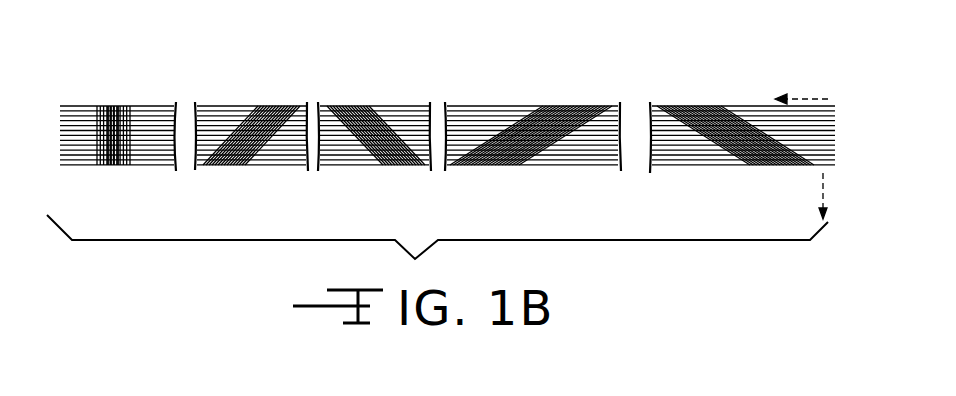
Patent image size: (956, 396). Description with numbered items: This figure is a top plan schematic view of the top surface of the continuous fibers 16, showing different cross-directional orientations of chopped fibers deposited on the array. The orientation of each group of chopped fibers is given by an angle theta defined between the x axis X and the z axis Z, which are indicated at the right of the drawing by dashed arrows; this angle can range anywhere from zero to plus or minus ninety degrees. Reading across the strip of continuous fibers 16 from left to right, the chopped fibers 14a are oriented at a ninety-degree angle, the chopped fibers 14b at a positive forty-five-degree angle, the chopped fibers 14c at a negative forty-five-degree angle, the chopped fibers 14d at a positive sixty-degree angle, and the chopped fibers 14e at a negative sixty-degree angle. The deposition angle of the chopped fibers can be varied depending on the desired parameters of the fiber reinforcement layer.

The continuous fibers 16 is at (86, 105).
The chopped fibers 14a is at (130, 110).
The chopped fibers 14b is at (243, 120).
The chopped fibers 14c is at (380, 112).
The chopped fibers 14d is at (510, 130).
The chopped fibers 14e is at (737, 118).
The x axis X is at (812, 97).
The z axis Z is at (822, 188).